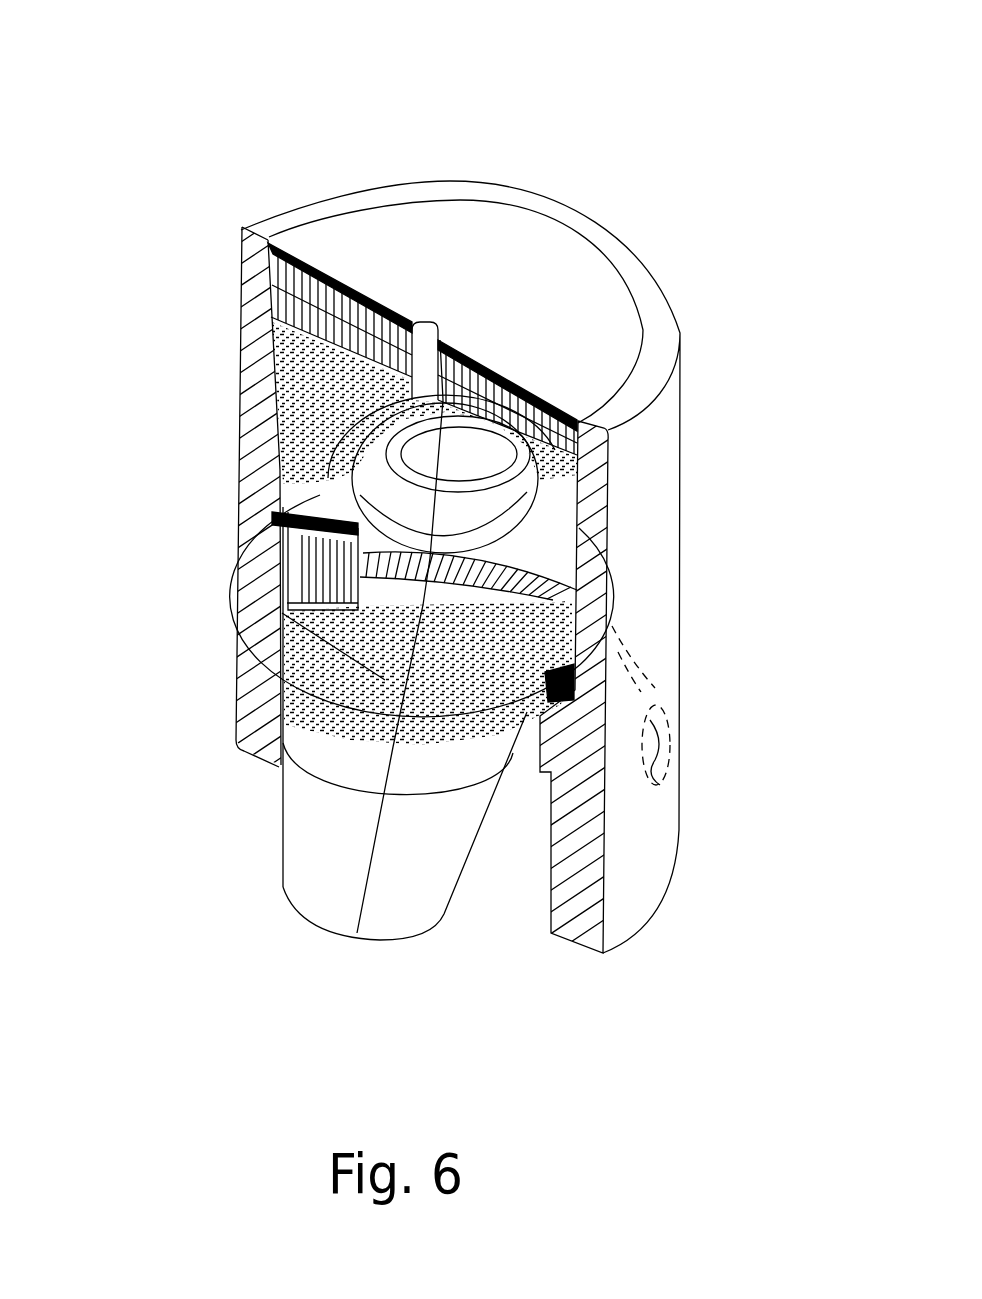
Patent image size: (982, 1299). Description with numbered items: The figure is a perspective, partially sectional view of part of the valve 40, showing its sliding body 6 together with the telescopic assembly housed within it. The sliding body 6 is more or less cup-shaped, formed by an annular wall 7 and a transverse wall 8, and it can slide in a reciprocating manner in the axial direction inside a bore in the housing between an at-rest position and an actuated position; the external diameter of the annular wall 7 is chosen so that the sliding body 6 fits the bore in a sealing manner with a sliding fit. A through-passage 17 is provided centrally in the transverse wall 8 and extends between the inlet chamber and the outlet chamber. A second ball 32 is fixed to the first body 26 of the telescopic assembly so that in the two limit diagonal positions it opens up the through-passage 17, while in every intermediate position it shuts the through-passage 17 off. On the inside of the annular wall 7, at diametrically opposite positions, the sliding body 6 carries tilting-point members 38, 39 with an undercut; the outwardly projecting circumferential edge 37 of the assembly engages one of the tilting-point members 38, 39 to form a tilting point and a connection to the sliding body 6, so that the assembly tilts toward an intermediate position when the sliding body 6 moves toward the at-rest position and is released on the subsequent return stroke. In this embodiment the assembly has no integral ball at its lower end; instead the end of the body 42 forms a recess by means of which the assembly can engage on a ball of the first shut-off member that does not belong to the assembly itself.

The sliding body 6 is at (750, 303).
The annular wall 7 is at (646, 538).
The transverse wall 8 is at (548, 278).
The through-passage 17 is at (423, 337).
The first body 26 is at (384, 491).
The second ball 32 is at (465, 467).
The circumferential edge 37 is at (237, 700).
The tilting-point member 38 is at (237, 597).
The tilting-point member 39 is at (570, 747).
The valve 40 is at (513, 900).
The body 42 is at (313, 870).